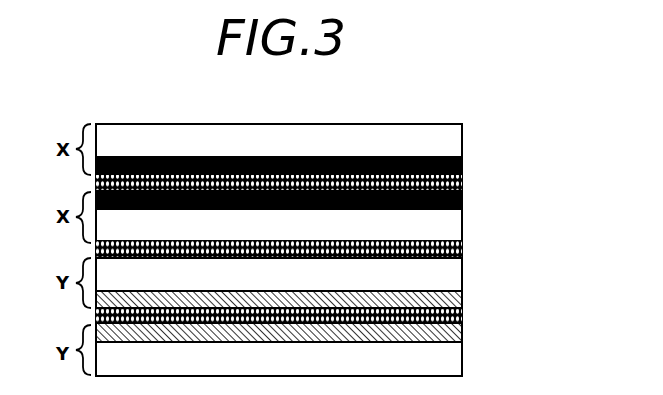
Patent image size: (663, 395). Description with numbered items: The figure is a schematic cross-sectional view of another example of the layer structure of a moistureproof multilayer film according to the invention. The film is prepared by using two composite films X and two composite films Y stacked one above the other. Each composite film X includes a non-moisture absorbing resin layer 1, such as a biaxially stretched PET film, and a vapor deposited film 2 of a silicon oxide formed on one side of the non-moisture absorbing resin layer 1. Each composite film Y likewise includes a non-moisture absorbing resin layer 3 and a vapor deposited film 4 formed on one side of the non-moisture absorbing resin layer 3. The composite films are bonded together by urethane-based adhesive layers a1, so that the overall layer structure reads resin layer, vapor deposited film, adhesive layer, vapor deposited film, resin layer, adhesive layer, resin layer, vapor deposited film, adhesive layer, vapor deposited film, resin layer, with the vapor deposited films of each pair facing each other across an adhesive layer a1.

The non-moisture absorbing resin layer 1 is at (462, 139).
The vapor deposited film 2 is at (462, 163).
The adhesive layer a1 is at (462, 181).
The non-moisture absorbing resin layer 3 is at (462, 273).
The vapor deposited film 4 is at (462, 298).